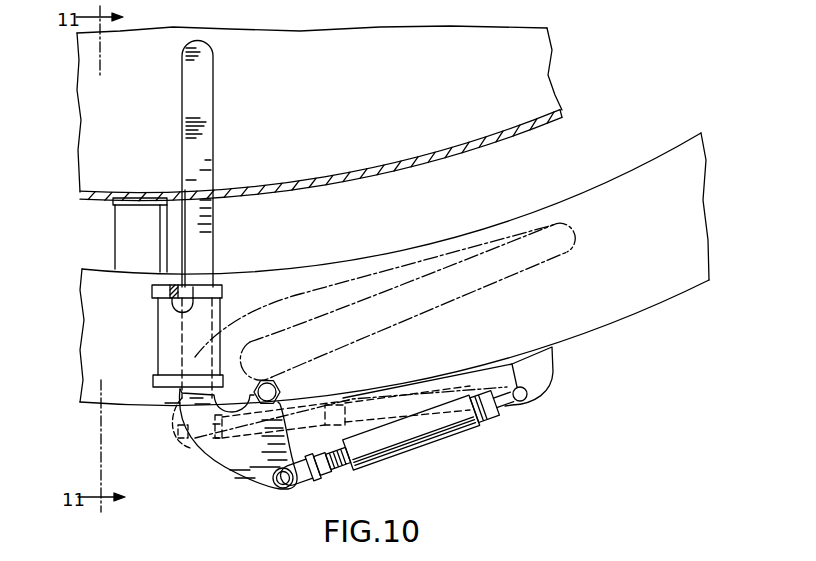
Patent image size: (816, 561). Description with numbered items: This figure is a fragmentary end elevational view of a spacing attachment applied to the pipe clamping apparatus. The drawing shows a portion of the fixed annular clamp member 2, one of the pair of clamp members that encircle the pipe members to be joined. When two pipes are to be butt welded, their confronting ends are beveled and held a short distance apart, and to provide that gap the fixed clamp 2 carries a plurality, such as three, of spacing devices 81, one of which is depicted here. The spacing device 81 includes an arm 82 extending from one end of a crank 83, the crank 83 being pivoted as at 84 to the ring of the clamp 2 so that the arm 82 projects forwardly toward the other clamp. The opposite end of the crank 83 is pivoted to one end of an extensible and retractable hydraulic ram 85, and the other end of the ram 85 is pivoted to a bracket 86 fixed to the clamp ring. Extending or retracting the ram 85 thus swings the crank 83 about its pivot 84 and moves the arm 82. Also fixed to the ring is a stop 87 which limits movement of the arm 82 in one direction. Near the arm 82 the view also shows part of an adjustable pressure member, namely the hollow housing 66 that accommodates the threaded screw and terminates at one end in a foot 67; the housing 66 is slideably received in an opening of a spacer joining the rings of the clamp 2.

The annular clamp member 2 is at (676, 308).
The hollow housing 66 is at (127, 228).
The foot 67 is at (113, 201).
The spacing device 81 is at (217, 468).
The arm 82 is at (203, 247).
The crank 83 is at (248, 468).
The pivot 84 is at (271, 388).
The hydraulic ram 85 is at (500, 427).
The bracket 86 is at (556, 372).
The stop 87 is at (152, 292).